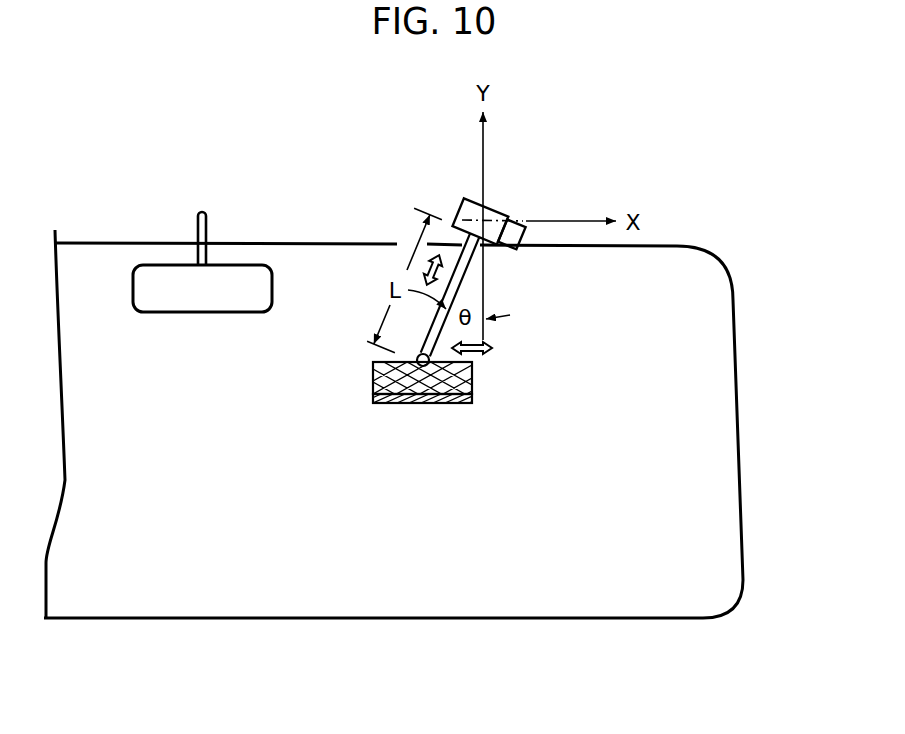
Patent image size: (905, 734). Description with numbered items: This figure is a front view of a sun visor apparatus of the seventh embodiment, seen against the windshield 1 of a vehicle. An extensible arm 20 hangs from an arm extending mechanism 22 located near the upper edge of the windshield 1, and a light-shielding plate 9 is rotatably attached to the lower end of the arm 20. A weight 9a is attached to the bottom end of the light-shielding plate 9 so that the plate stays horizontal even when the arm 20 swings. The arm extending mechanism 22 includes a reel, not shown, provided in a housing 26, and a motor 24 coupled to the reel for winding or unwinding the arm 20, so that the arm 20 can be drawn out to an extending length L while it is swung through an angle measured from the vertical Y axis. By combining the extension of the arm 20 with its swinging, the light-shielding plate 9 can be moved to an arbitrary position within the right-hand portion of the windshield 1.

The windshield 1 is at (347, 595).
The light-shielding plate 9 is at (473, 376).
The weight 9a is at (473, 398).
The extensible arm 20 is at (460, 278).
The arm extending mechanism 22 is at (505, 189).
The motor 24 is at (525, 226).
The housing 26 is at (462, 197).